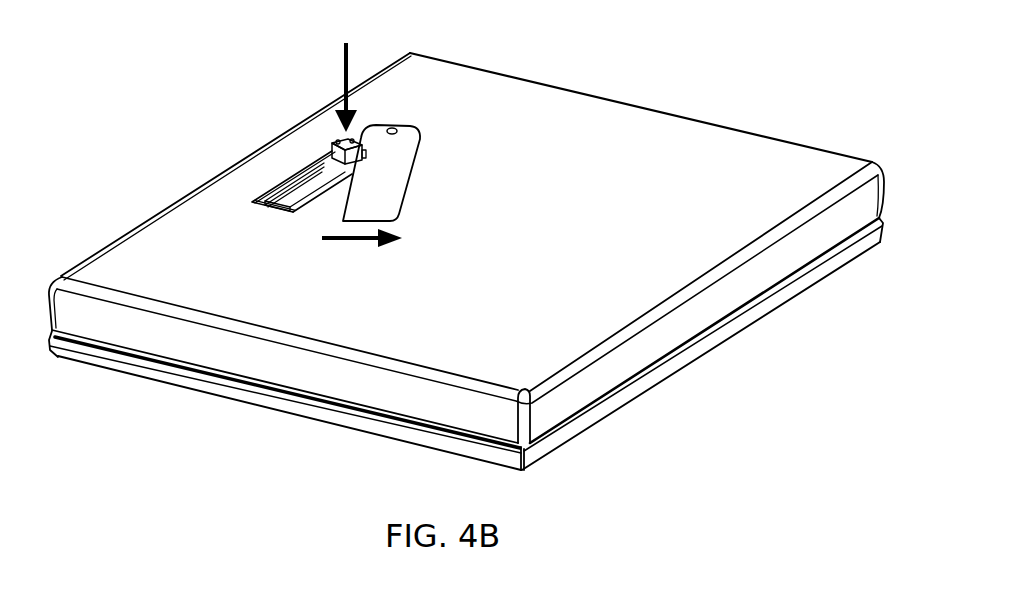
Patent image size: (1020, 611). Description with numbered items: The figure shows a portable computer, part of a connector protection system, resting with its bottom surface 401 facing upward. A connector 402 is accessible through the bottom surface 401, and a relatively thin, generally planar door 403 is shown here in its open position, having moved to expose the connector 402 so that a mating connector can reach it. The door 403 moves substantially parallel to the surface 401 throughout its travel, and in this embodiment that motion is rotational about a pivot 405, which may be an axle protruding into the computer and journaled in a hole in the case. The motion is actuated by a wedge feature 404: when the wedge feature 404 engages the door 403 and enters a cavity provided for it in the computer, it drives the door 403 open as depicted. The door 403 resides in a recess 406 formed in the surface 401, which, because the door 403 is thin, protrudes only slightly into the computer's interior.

The bottom surface 401 is at (668, 191).
The connector 402 is at (310, 186).
The door 403 is at (398, 172).
The wedge feature 404 is at (334, 143).
The pivot 405 is at (395, 128).
The recess 406 is at (322, 215).